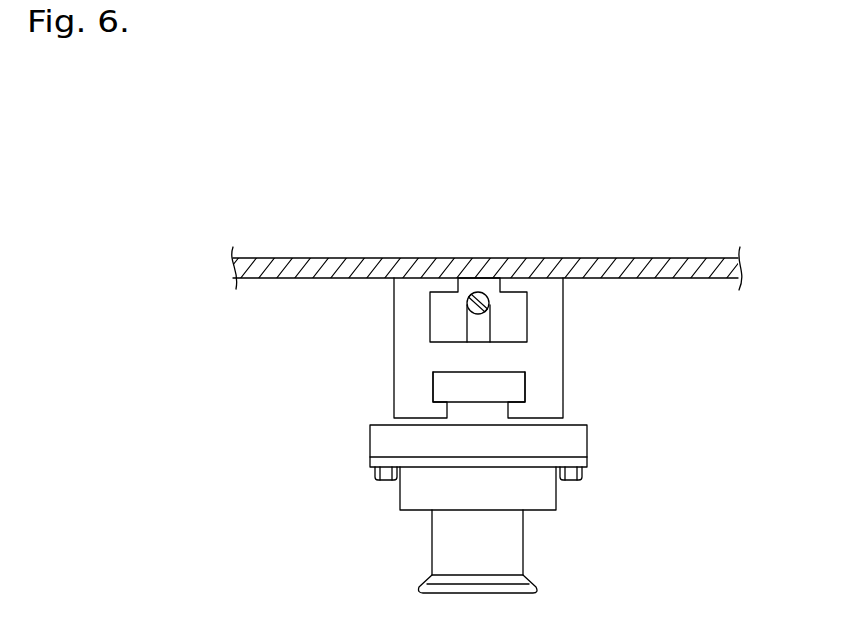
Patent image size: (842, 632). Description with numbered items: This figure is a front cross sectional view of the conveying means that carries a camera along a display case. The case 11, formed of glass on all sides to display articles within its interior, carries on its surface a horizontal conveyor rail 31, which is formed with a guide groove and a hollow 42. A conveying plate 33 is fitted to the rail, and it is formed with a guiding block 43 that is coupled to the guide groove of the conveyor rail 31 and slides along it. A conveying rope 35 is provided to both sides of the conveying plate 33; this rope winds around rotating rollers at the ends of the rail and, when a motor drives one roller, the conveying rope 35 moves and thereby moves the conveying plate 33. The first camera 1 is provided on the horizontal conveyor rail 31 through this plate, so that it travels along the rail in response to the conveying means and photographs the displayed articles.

The case 11 is at (603, 268).
The horizontal conveyor rail 31 is at (548, 368).
The conveying plate 33 is at (382, 445).
The conveying rope 35 is at (477, 293).
The hollow 42 is at (445, 323).
The guiding block 43 is at (472, 392).
The first camera 1 is at (450, 552).